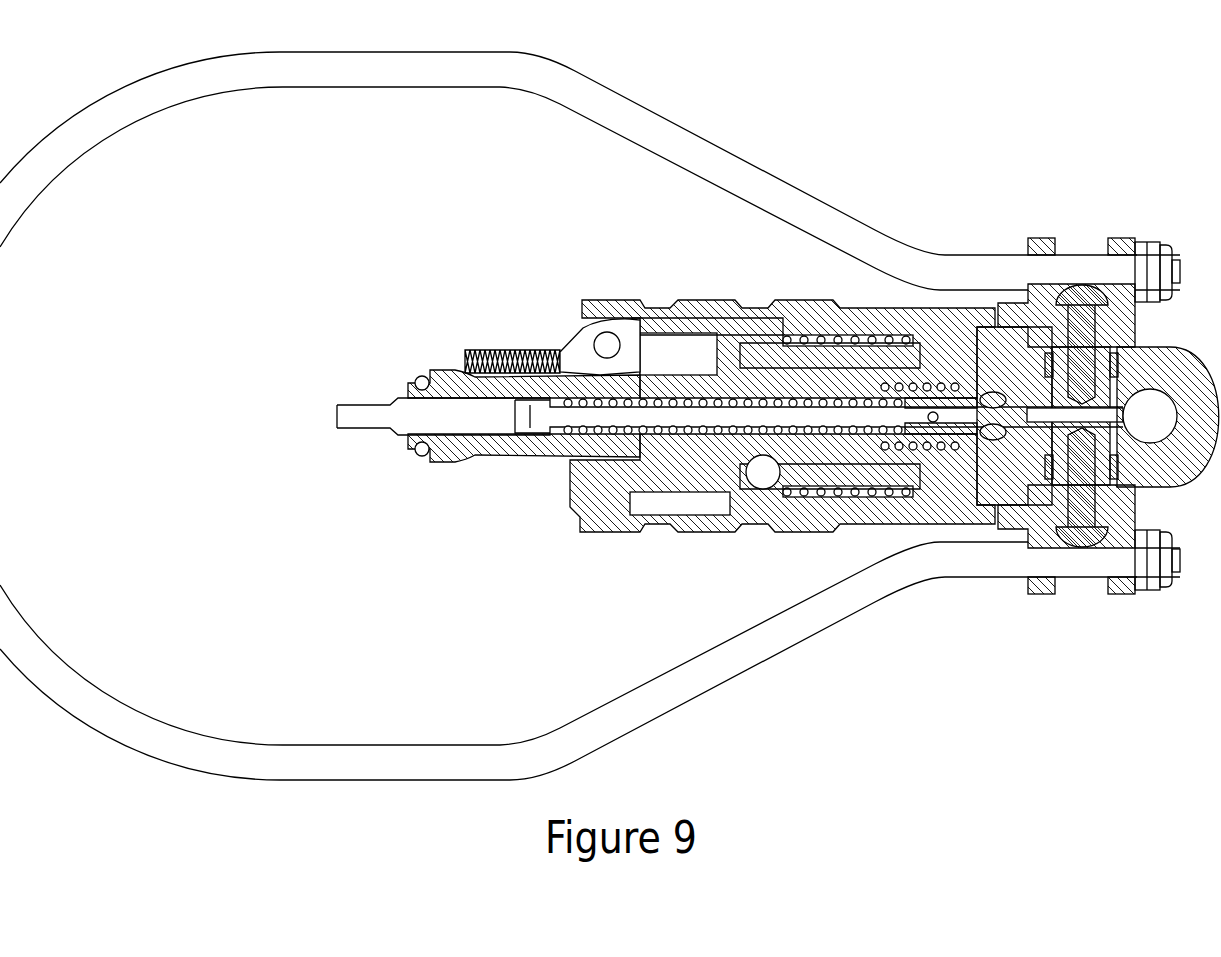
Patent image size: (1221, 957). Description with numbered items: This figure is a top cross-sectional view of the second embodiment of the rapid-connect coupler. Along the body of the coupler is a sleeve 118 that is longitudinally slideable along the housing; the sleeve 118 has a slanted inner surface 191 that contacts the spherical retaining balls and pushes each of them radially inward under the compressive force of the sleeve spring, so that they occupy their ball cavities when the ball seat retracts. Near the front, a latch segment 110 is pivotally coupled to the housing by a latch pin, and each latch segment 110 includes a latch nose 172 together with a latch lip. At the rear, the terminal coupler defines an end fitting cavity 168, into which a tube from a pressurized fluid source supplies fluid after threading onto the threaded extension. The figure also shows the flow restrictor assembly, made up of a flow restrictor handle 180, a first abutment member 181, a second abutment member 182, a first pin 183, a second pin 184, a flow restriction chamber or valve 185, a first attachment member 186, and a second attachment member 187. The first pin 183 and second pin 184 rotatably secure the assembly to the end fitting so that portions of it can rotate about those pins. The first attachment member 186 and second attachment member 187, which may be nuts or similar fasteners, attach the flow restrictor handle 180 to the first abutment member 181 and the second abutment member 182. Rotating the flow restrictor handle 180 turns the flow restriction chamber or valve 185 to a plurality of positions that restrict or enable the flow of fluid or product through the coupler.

The latch segment 110 is at (570, 352).
The sleeve 118 is at (703, 300).
The end fitting cavity 168 is at (1157, 407).
The latch nose 172 is at (517, 348).
The flow restrictor handle 180 is at (757, 648).
The first abutment member 181 is at (1010, 522).
The second abutment member 182 is at (1007, 308).
The first pin 183 is at (1087, 537).
The second pin 184 is at (1082, 295).
The flow restriction chamber or valve 185 is at (1088, 417).
The first attachment member 186 is at (1147, 245).
The second attachment member 187 is at (1147, 587).
The slanted inner surface 191 is at (733, 495).